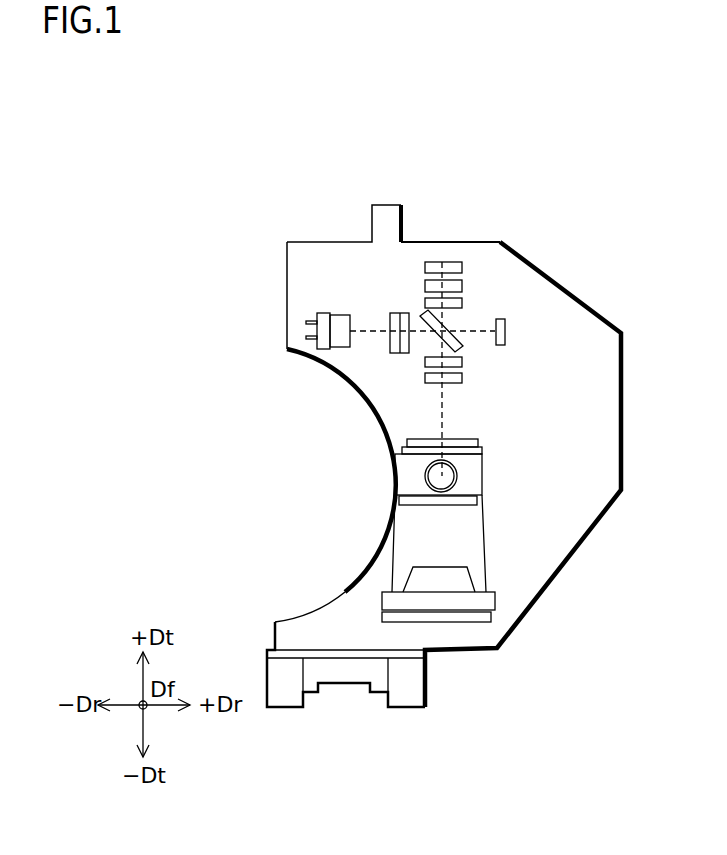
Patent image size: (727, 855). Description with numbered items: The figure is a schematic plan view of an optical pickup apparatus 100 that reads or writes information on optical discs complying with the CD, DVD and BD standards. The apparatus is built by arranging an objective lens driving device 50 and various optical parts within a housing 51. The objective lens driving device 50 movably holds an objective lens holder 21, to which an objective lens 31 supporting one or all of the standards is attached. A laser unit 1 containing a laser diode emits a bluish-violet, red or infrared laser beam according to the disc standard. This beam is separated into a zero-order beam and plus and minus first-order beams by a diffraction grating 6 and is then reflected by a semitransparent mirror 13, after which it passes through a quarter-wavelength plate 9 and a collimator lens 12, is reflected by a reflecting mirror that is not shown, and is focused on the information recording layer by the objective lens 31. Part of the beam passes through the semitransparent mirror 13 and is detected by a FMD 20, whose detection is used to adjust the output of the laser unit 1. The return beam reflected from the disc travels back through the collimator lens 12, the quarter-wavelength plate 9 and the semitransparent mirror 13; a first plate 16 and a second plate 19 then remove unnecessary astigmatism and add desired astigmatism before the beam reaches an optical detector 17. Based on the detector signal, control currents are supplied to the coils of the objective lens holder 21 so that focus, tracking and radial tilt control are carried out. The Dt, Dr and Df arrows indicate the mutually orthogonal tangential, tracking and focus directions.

The optical pickup apparatus 100 is at (383, 142).
The laser unit 1 is at (325, 313).
The diffraction grating 6 is at (409, 313).
The optical detector 17 is at (463, 267).
The second plate 19 is at (463, 284).
The first plate 16 is at (463, 300).
The semitransparent mirror 13 is at (461, 333).
The FMD 20 is at (505, 320).
The quarter-wavelength plate 9 is at (463, 362).
The collimator lens 12 is at (463, 378).
The housing 51 is at (287, 293).
The objective lens driving device 50 is at (392, 464).
The objective lens holder 21 is at (398, 475).
The objective lens 31 is at (425, 490).